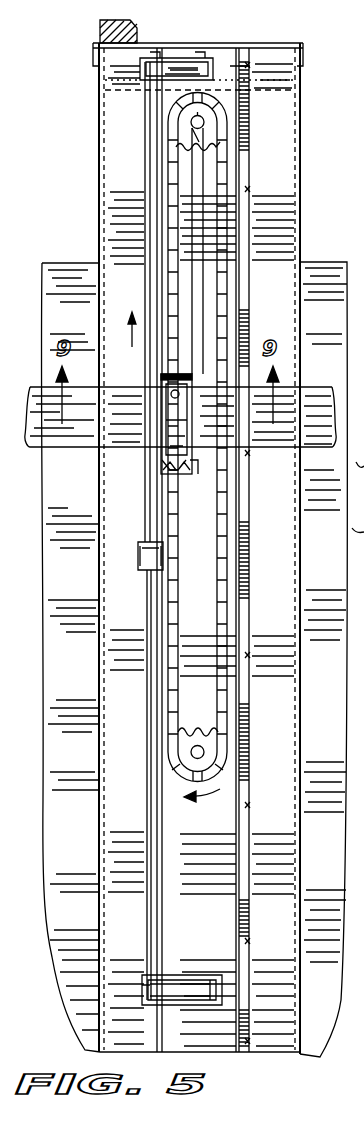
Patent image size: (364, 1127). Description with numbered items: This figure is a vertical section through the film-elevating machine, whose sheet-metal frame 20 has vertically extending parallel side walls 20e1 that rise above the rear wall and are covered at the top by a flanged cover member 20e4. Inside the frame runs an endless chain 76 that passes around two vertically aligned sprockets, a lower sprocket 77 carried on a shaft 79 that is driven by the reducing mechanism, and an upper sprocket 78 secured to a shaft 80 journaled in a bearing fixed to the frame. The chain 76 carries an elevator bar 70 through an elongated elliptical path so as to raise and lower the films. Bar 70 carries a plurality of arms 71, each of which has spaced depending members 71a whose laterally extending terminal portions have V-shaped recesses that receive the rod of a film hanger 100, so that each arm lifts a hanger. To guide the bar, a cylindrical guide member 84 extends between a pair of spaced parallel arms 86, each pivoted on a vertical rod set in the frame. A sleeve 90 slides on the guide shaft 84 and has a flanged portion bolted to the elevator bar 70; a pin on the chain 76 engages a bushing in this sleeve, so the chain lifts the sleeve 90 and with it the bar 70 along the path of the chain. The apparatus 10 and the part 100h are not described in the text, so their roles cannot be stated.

The apparatus 10 is at (358, 455).
The frame 20 is at (301, 112).
The side walls 20e1 is at (99, 182).
The flanged cover member 20e4 is at (232, 44).
The elevator bar 70 is at (318, 400).
The arm 71 is at (197, 366).
The depending member 71a is at (190, 438).
The endless chain 76 is at (228, 291).
The sprocket 77 is at (200, 730).
The sprocket 78 is at (205, 123).
The shaft 79 is at (205, 754).
The shaft 80 is at (208, 148).
The guide member 84 is at (147, 596).
The arms 86 is at (176, 58).
The sleeve 90 is at (145, 512).
The film hanger 100 is at (355, 521).
The drive coupling 100h is at (196, 462).